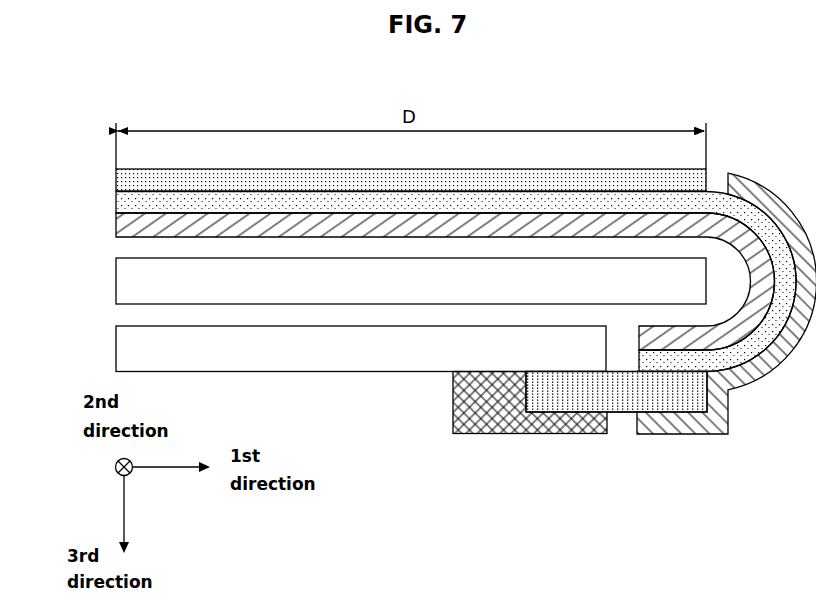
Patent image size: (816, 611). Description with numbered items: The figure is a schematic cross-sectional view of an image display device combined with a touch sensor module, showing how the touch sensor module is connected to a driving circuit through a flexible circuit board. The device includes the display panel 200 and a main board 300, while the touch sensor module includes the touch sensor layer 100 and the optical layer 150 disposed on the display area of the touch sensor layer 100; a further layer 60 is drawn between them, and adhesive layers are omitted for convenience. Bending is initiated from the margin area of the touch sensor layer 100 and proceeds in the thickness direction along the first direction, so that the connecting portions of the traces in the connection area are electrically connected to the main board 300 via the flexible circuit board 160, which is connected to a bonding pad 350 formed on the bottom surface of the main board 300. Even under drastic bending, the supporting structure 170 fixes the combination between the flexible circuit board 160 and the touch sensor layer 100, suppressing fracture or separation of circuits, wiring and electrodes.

The optical layer 150 is at (116, 180).
The adhesive/polarizing layer 60 is at (116, 203).
The touch sensor layer 100 is at (116, 228).
The display panel 200 is at (116, 284).
The main board 300 is at (116, 350).
The bonding pad 350 is at (490, 434).
The flexible circuit board 160 is at (620, 405).
The supporting structure 170 is at (694, 434).